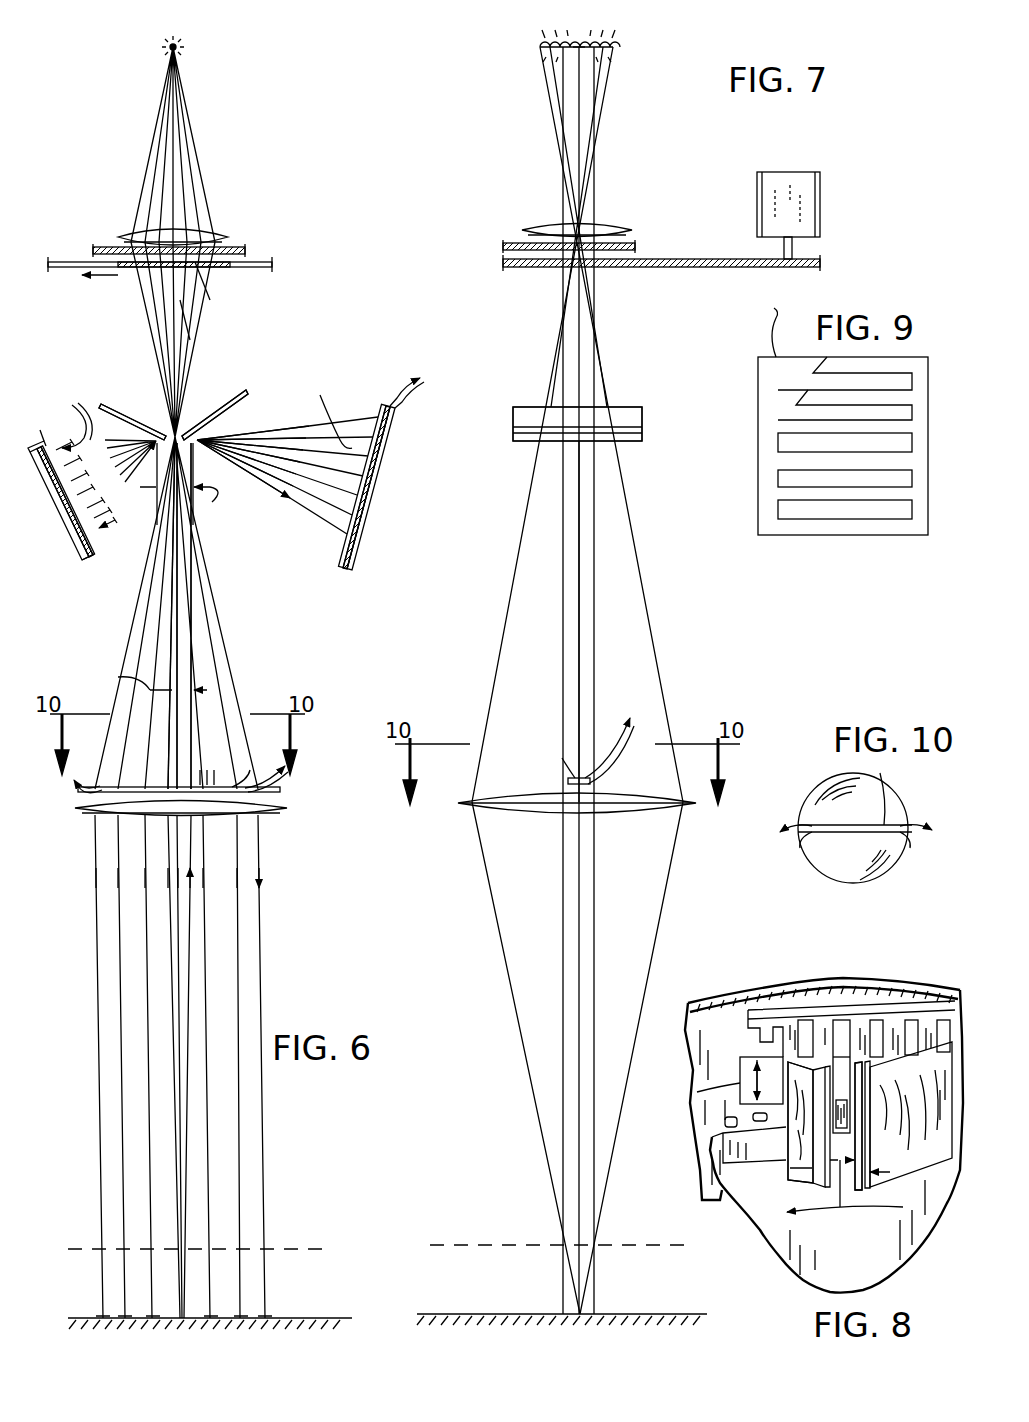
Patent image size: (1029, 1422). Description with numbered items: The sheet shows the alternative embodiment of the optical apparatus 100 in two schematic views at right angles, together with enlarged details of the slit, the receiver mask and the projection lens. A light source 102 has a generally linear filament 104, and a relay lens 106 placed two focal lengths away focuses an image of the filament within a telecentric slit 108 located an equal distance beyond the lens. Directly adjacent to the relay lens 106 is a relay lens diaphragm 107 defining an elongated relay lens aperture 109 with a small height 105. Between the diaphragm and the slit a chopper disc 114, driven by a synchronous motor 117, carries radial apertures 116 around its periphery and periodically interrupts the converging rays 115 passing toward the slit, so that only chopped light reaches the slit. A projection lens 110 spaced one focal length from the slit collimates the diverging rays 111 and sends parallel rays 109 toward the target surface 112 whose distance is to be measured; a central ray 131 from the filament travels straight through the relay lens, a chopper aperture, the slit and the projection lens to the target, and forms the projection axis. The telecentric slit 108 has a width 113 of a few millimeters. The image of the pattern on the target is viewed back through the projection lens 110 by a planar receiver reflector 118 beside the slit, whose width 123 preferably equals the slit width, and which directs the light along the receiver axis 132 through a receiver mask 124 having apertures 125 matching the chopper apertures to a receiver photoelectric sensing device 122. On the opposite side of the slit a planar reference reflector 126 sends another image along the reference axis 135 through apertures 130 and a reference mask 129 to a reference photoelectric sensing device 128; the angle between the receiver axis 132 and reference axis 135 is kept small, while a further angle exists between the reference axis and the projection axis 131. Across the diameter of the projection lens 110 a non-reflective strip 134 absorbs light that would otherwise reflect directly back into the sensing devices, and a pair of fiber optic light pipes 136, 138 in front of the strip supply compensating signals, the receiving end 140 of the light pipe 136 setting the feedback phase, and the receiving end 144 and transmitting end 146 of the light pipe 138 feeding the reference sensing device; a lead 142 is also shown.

In FIG. 6, the optical apparatus 100 is at (288, 197).
In FIG. 7, the optical apparatus 100 is at (634, 190).
In FIG. 6, the light source 102 is at (205, 35).
In FIG. 7, the light source 102 is at (634, 40).
In FIG. 6, the filament 104 is at (178, 50).
In FIG. 7, the filament 104 is at (581, 45).
In FIG. 8, the height of relay lens aperture 105 is at (720, 1092).
In FIG. 6, the relay lens 106 is at (218, 240).
In FIG. 7, the relay lens 106 is at (630, 232).
In FIG. 6, the relay lens diaphragm 107 is at (243, 250).
In FIG. 7, the relay lens diaphragm 107 is at (638, 247).
In FIG. 8, the relay lens diaphragm 107 is at (717, 1008).
In FIG. 6, the telecentric slit 108 is at (188, 430).
In FIG. 7, the telecentric slit 108 is at (520, 443).
In FIG. 8, the telecentric slit 108 is at (848, 1145).
In FIG. 6, the relay lens aperture 109 is at (138, 242).
In FIG. 7, the relay lens aperture 109 is at (580, 240).
In FIG. 8, the relay lens aperture 109 is at (745, 1062).
In FIG. 6, the projection lens 110 is at (272, 812).
In FIG. 7, the projection lens 110 is at (500, 796).
In FIG. 10, the projection lens 110 is at (884, 883).
In FIG. 6, the diverging rays 111 is at (208, 745).
In FIG. 6, the target surface 112 is at (312, 1247).
In FIG. 7, the target surface 112 is at (642, 1245).
In FIG. 8, the width of telecentric slit 113 is at (840, 1208).
In FIG. 6, the chopper disc 114 is at (268, 270).
In FIG. 7, the chopper disc 114 is at (708, 268).
In FIG. 9, the chopper disc 114 is at (775, 332).
In FIG. 8, the chopper disc 114 is at (812, 1010).
In FIG. 6, the converging rays 115 is at (195, 328).
In FIG. 6, the apertures of chopper disc 116 is at (212, 272).
In FIG. 8, the apertures of chopper disc 116 is at (907, 1020).
In FIG. 7, the synchronous motor 117 is at (822, 182).
In FIG. 6, the receiver reflector 118 is at (222, 420).
In FIG. 7, the receiver reflector 118 is at (643, 432).
In FIG. 8, the receiver reflector 118 is at (888, 1098).
In FIG. 6, the receiver photoelectric sensing device 122 is at (378, 470).
In FIG. 9, the receiver photoelectric sensing device 122 is at (762, 380).
In FIG. 8, the width of receiver reflector 123 is at (793, 1172).
In FIG. 6, the receiver mask 124 is at (386, 412).
In FIG. 9, the receiver mask 124 is at (790, 484).
In FIG. 6, the apertures of receiver mask 125 is at (345, 530).
In FIG. 9, the apertures of receiver mask 125 is at (790, 447).
In FIG. 6, the reference reflector 126 is at (137, 424).
In FIG. 8, the reference reflector 126 is at (790, 1152).
In FIG. 6, the reference photoelectric sensing device 128 is at (70, 548).
In FIG. 6, the reference mask 129 is at (104, 562).
In FIG. 6, the apertures 130 is at (95, 512).
In FIG. 6, the projection axis 131 is at (180, 670).
In FIG. 7, the projection axis 131 is at (585, 655).
In FIG. 6, the receiver axis 132 is at (192, 705).
In FIG. 6, the non-reflective strip 134 is at (245, 793).
In FIG. 7, the non-reflective strip 134 is at (568, 781).
In FIG. 10, the non-reflective strip 134 is at (882, 778).
In FIG. 6, the reference axis 135 is at (168, 645).
In FIG. 6, the fiber optic light pipe 136 is at (320, 395).
In FIG. 7, the fiber optic light pipe 136 is at (630, 742).
In FIG. 10, the fiber optic light pipe 136 is at (926, 826).
In FIG. 6, the fiber optic light pipe 138 is at (72, 405).
In FIG. 10, the fiber optic light pipe 138 is at (782, 828).
In FIG. 6, the receiving end of light pipe 140 is at (236, 784).
In FIG. 7, the receiving end of light pipe 140 is at (577, 778).
In FIG. 10, the receiving end of light pipe 140 is at (906, 836).
In FIG. 6, the detector lead 142 is at (348, 440).
In FIG. 6, the receiving end of light pipe 144 is at (100, 783).
In FIG. 10, the receiving end of light pipe 144 is at (802, 836).
In FIG. 6, the transmitting end of light pipe 146 is at (48, 445).